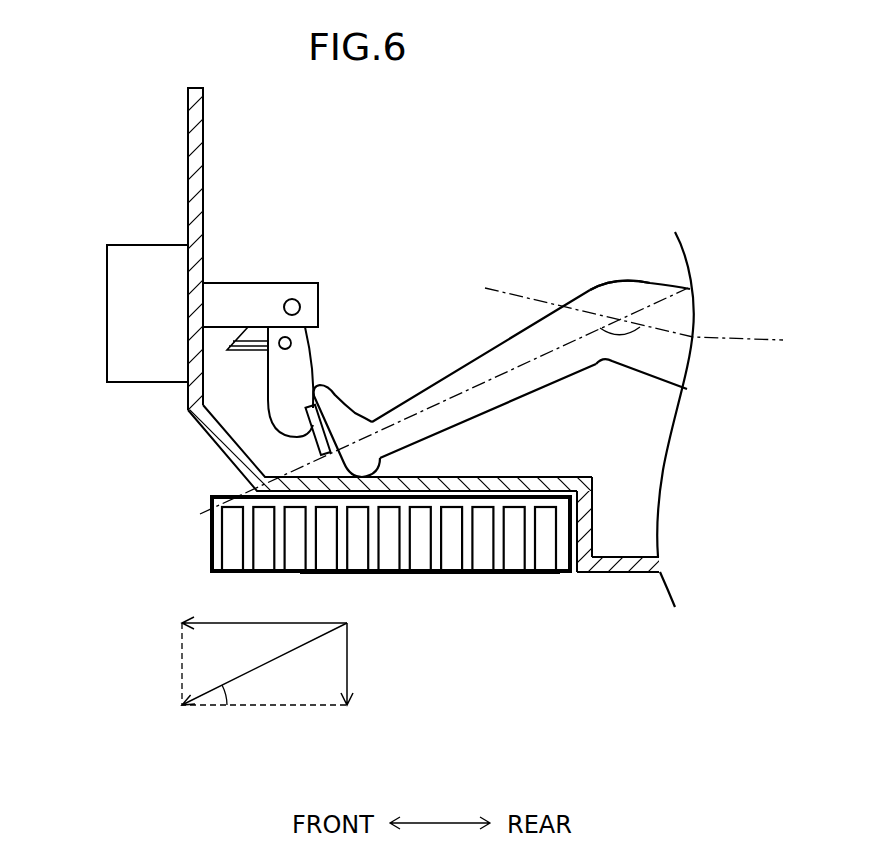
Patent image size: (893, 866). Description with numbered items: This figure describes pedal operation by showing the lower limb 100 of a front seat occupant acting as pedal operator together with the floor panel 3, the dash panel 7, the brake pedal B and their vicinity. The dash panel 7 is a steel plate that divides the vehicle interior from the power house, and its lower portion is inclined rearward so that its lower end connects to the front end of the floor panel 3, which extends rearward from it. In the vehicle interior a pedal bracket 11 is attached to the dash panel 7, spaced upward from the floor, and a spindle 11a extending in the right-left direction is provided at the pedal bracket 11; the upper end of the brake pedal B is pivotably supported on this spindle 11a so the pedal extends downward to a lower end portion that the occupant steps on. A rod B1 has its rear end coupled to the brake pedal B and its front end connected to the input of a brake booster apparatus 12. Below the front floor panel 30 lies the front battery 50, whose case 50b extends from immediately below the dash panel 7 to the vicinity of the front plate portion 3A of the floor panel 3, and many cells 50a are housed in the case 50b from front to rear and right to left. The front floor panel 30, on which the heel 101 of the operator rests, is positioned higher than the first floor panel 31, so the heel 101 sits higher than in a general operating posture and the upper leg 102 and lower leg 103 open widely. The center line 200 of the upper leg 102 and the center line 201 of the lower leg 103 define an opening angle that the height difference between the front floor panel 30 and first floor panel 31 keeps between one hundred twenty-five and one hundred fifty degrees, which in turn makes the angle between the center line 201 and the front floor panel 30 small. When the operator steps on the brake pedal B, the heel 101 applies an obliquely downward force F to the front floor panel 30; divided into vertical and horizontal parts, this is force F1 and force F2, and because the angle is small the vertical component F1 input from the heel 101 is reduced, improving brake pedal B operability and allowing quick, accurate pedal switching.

The dash panel 7 is at (188, 128).
The pedal bracket 11 is at (260, 283).
The spindle 11a is at (300, 307).
The brake booster apparatus 12 is at (107, 352).
The rod B1 is at (248, 352).
The brake pedal B is at (268, 410).
The front floor panel 30 is at (497, 477).
The front plate portion 3A is at (596, 527).
The floor panel 3 is at (609, 584).
The first floor panel 31 is at (643, 573).
The front battery 50 is at (503, 585).
The cells 50a is at (565, 542).
The case 50b is at (445, 573).
The heel 101 is at (362, 478).
The lower leg 103 is at (477, 375).
The upper leg 102 is at (680, 300).
The lower limb 100 is at (617, 272).
The center line of the lower leg 201 is at (418, 415).
The center line of the upper leg 200 is at (666, 323).
The force F is at (272, 662).
The force F1 is at (347, 655).
The force F2 is at (238, 623).